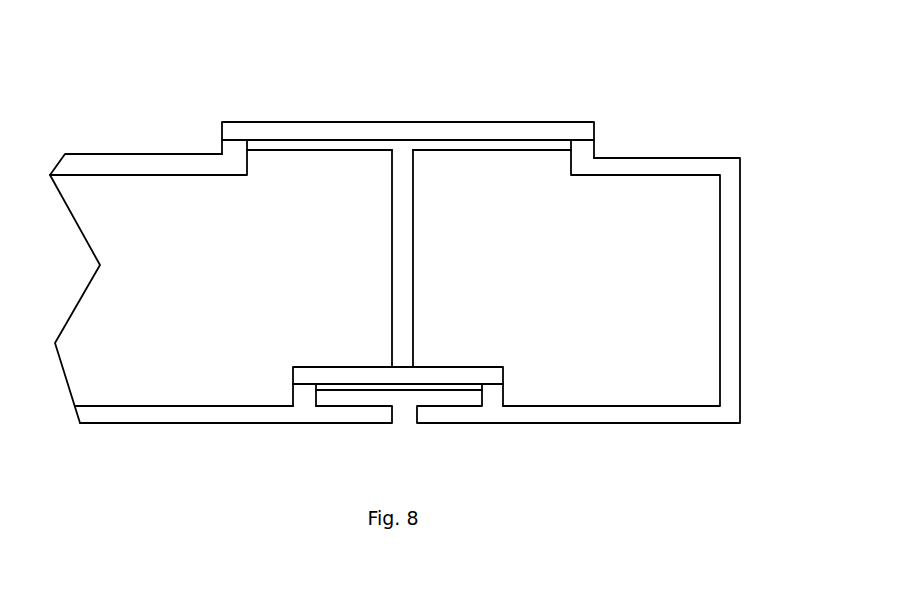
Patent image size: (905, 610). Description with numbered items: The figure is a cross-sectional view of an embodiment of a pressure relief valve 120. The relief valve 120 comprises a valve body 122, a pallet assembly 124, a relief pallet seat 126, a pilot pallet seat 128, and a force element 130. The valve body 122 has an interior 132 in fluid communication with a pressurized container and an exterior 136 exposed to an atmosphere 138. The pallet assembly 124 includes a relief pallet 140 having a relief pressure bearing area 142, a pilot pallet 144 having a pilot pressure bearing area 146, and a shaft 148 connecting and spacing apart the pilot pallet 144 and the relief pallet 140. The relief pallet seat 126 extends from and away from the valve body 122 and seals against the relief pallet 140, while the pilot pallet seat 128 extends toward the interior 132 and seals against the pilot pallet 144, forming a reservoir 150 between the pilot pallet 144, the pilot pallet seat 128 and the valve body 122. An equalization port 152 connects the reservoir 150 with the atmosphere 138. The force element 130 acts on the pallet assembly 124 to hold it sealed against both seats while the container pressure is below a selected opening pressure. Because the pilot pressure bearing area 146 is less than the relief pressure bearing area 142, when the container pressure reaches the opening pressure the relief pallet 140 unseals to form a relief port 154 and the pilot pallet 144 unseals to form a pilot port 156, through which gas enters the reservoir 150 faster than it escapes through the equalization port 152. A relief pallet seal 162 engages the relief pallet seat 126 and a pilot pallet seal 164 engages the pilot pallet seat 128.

The relief valve 120 is at (677, 98).
The valve body 122 is at (170, 163).
The pallet assembly 124 is at (416, 195).
The relief pallet seat 126 is at (580, 155).
The pilot pallet seat 128 is at (497, 399).
The force element 130 is at (407, 242).
The interior 132 is at (703, 278).
The exterior 136 is at (187, 428).
The atmosphere 138 is at (640, 468).
The relief pallet 140 is at (502, 120).
The relief pressure bearing area 142 is at (353, 152).
The pilot pallet 144 is at (445, 367).
The pilot pressure bearing area 146 is at (325, 365).
The shaft 148 is at (392, 270).
The reservoir 150 is at (372, 402).
The equalization port 152 is at (408, 423).
The relief port 154 is at (220, 152).
The pilot port 156 is at (295, 388).
The relief pallet seal 162 is at (242, 143).
The pilot pallet seal 164 is at (497, 387).